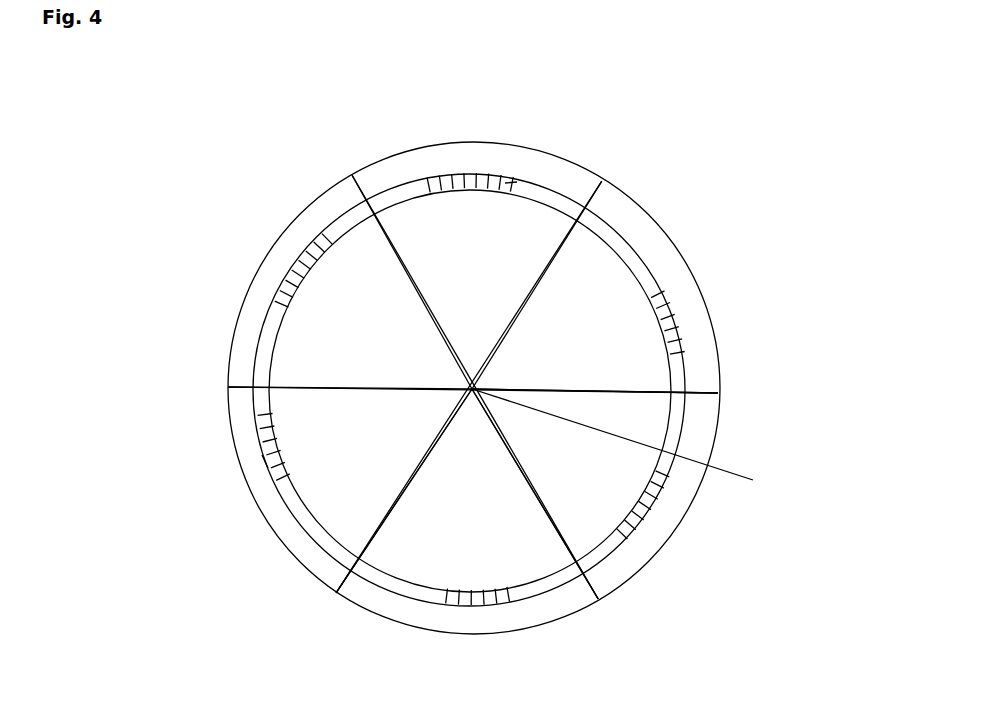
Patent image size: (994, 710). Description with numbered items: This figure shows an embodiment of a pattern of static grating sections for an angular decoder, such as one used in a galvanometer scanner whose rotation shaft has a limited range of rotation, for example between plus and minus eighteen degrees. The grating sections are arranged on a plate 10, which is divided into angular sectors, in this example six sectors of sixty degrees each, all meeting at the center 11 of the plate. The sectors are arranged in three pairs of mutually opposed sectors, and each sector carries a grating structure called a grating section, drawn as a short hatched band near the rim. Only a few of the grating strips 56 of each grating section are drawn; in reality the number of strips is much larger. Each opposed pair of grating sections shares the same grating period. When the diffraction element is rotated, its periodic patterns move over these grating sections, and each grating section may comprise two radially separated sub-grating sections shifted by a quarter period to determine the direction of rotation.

The plate 10 is at (707, 442).
The center of plate 11 is at (520, 390).
The grating strips 56 is at (500, 183).